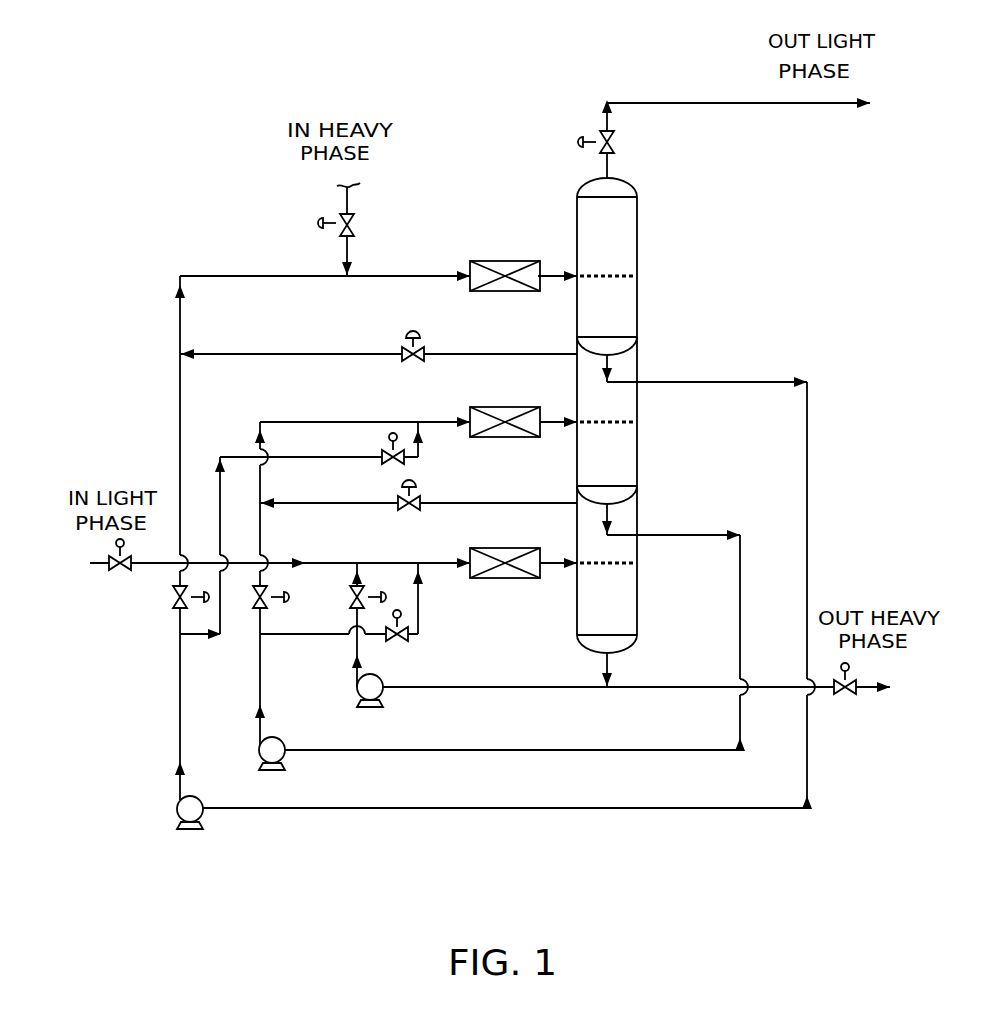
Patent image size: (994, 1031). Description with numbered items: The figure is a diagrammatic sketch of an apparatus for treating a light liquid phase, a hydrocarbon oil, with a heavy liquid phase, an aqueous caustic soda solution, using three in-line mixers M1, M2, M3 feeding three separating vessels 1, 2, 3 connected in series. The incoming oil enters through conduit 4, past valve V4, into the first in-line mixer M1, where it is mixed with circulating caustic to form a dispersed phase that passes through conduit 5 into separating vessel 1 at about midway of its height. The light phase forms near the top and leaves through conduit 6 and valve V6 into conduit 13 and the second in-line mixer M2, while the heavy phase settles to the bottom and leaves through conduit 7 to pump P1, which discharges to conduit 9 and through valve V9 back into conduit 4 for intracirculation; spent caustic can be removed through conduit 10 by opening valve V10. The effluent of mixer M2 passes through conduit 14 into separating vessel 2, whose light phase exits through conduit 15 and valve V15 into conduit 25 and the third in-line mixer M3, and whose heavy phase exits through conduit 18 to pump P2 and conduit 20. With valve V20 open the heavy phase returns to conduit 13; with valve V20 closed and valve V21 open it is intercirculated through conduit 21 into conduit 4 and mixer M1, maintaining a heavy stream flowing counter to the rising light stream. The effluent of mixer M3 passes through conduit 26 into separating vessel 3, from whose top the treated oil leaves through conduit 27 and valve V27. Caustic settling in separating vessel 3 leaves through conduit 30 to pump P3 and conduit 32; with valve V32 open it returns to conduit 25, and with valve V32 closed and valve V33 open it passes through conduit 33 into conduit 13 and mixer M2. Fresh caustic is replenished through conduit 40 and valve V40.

The separating vessel 1 is at (614, 624).
The separating vessel 2 is at (614, 478).
The separating vessel 3 is at (614, 331).
The conduit 4 is at (173, 560).
The conduit 5 is at (561, 546).
The conduit 6 is at (515, 502).
The conduit 7 is at (470, 689).
The conduit 9 is at (357, 658).
The conduit 10 is at (673, 687).
The conduit 13 is at (342, 422).
The conduit 14 is at (549, 420).
The conduit 15 is at (302, 352).
The conduit 18 is at (758, 592).
The conduit 20 is at (262, 518).
The conduit 21 is at (290, 634).
The conduit 25 is at (240, 275).
The conduit 26 is at (531, 267).
The conduit 27 is at (610, 161).
The conduit 30 is at (826, 552).
The conduit 32 is at (180, 410).
The conduit 33 is at (312, 458).
The conduit 40 is at (348, 258).
The first in-line mixer M1 is at (505, 551).
The second in-line mixer M2 is at (478, 418).
The third in-line mixer M3 is at (505, 260).
The pump P1 is at (358, 712).
The pump P2 is at (257, 775).
The pump P3 is at (175, 835).
The valve V4 is at (121, 573).
The valve V6 is at (404, 511).
The valve V9 is at (351, 598).
The valve V10 is at (842, 695).
The valve V15 is at (410, 330).
The valve V20 is at (260, 600).
The valve V21 is at (405, 636).
The valve V27 is at (612, 141).
The valve V32 is at (174, 600).
The valve V33 is at (405, 465).
The valve V40 is at (336, 225).